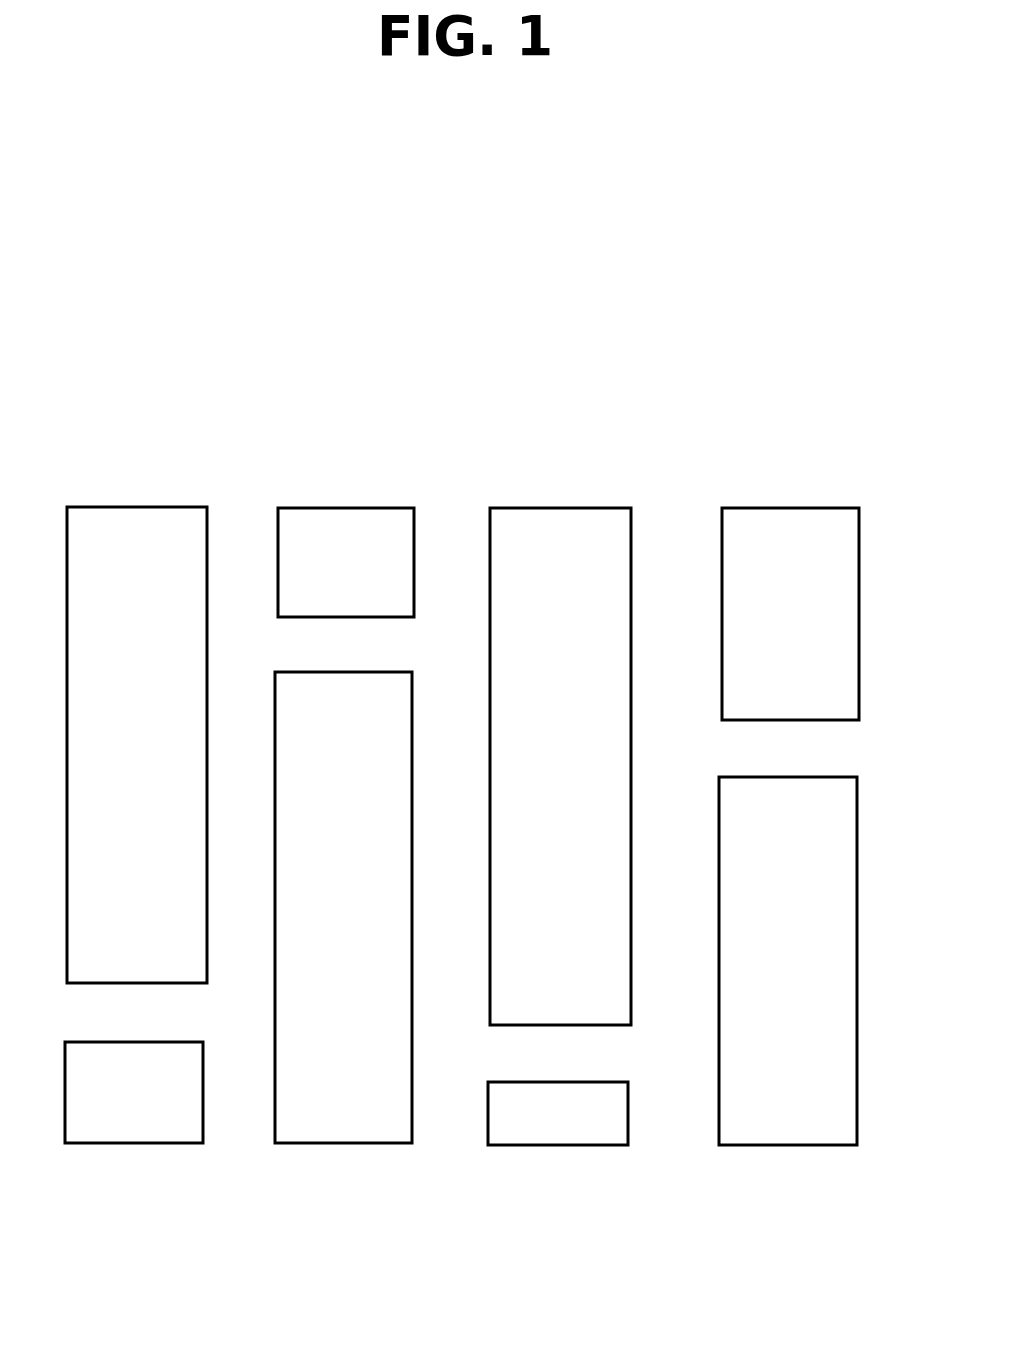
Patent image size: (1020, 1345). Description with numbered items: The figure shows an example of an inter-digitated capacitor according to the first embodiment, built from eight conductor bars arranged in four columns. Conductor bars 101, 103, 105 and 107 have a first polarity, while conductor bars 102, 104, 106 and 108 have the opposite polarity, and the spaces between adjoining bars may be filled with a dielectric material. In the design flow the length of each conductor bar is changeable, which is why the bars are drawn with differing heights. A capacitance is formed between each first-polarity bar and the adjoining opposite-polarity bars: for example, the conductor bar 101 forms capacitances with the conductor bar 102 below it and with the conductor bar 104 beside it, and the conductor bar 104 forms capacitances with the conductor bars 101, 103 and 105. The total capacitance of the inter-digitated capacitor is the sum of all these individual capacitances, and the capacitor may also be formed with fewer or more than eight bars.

The conductor bar 101 is at (125, 506).
The conductor bar 102 is at (102, 1144).
The conductor bar 103 is at (349, 507).
The conductor bar 104 is at (336, 1144).
The conductor bar 105 is at (574, 507).
The conductor bar 106 is at (568, 1146).
The conductor bar 107 is at (797, 507).
The conductor bar 108 is at (806, 1146).